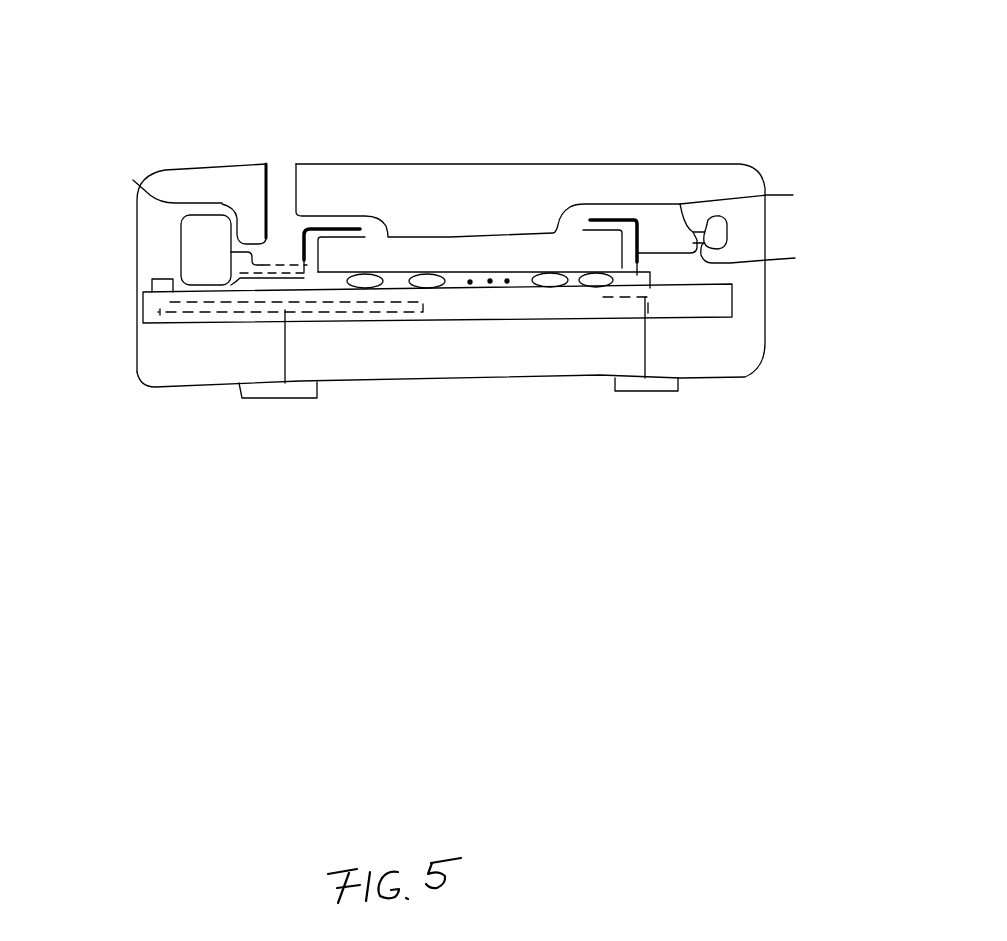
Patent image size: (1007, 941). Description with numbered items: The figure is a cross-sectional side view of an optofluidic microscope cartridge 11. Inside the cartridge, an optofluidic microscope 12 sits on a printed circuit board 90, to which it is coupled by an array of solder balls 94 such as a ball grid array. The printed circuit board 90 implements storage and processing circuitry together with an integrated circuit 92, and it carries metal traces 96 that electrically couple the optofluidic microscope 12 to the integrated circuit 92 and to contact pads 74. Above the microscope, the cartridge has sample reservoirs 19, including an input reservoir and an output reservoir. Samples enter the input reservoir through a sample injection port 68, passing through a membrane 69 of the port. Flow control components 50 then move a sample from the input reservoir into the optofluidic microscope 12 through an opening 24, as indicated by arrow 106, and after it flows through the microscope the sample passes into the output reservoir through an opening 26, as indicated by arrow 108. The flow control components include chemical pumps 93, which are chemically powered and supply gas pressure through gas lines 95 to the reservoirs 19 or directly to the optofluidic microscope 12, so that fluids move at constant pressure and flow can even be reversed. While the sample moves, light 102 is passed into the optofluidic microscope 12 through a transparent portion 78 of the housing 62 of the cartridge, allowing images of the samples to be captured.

The optofluidic microscope cartridge 11 is at (447, 52).
The optofluidic microscope 12 is at (527, 233).
The sample reservoir 19 is at (248, 240).
The opening 24 is at (367, 240).
The opening 26 is at (577, 240).
The flow control components 50 is at (143, 125).
The housing 62 is at (135, 313).
The sample injection port 68 is at (284, 162).
The membrane 69 is at (266, 163).
The contact pads 74 is at (288, 398).
The transparent portion 78 is at (563, 162).
The printed circuit board 90 is at (733, 305).
The integrated circuit 92 is at (152, 280).
The chemical pump 93 is at (180, 223).
The solder balls 94 is at (440, 293).
The gas lines 95 is at (228, 430).
The metal traces 96 is at (267, 280).
The light 102 is at (430, 240).
The arrow 106 is at (335, 220).
The arrow 108 is at (575, 223).